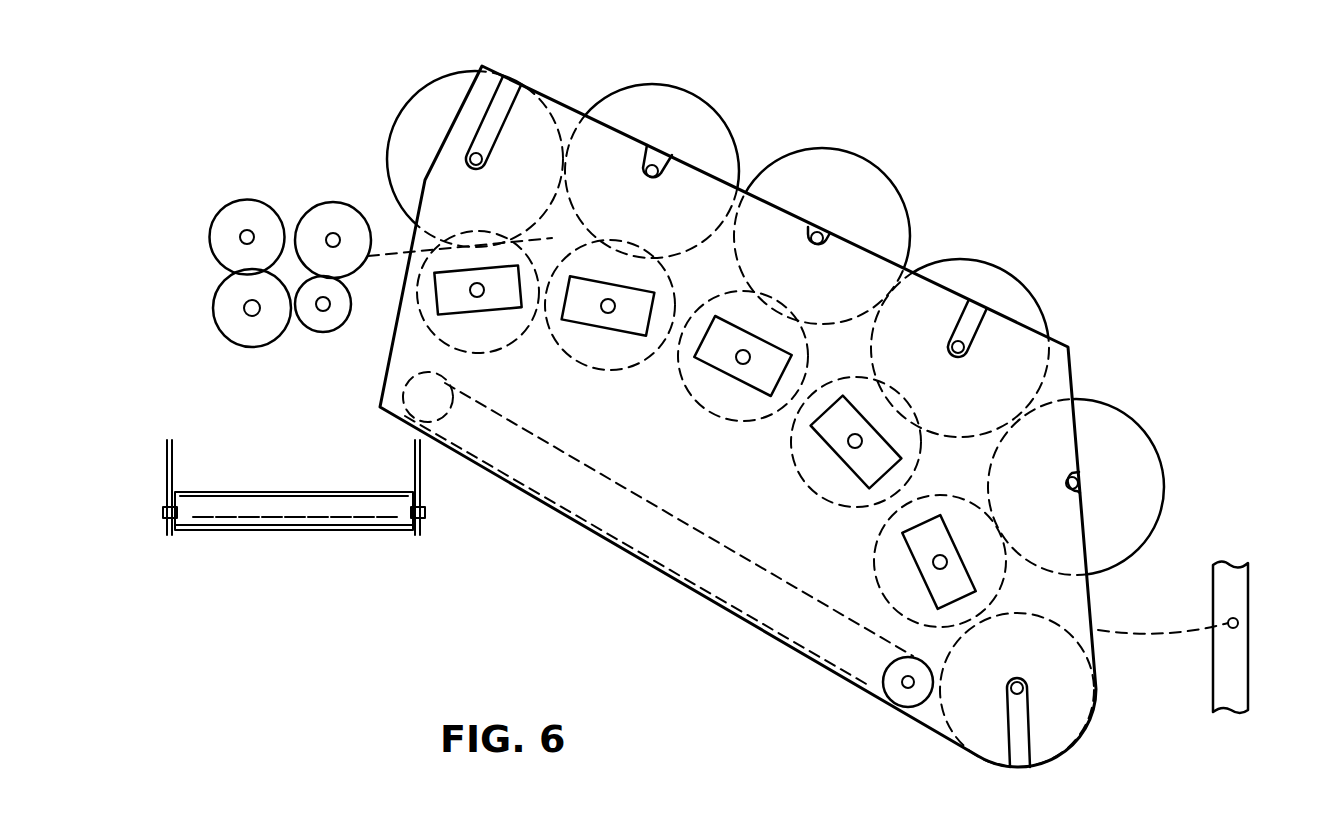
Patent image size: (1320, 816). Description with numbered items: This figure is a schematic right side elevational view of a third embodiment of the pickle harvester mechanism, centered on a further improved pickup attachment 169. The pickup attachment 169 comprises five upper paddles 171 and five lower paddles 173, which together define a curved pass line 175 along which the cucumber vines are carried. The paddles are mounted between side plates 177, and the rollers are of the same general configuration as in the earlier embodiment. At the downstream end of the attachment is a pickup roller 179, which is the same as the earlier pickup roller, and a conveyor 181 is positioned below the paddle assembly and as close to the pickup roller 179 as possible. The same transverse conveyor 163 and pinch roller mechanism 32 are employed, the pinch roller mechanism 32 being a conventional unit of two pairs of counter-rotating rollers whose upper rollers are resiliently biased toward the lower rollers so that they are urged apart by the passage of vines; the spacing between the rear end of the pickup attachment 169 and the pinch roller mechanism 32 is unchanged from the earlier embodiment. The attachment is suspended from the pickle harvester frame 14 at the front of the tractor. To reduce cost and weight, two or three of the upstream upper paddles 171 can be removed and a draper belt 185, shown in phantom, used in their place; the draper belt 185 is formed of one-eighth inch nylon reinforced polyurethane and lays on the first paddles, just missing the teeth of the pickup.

The pickle harvester frame 14 is at (1238, 593).
The pinch roller mechanism 32 is at (210, 193).
The transverse conveyor 163 is at (283, 520).
The pickup attachment 169 is at (490, 564).
The upper paddles 171 is at (432, 93).
The lower paddles 173 is at (505, 338).
The curved pass line 175 is at (393, 240).
The side plates 177 is at (400, 365).
The pickup roller 179 is at (1080, 697).
The conveyor 181 is at (805, 659).
The draper belt 185 is at (1133, 633).